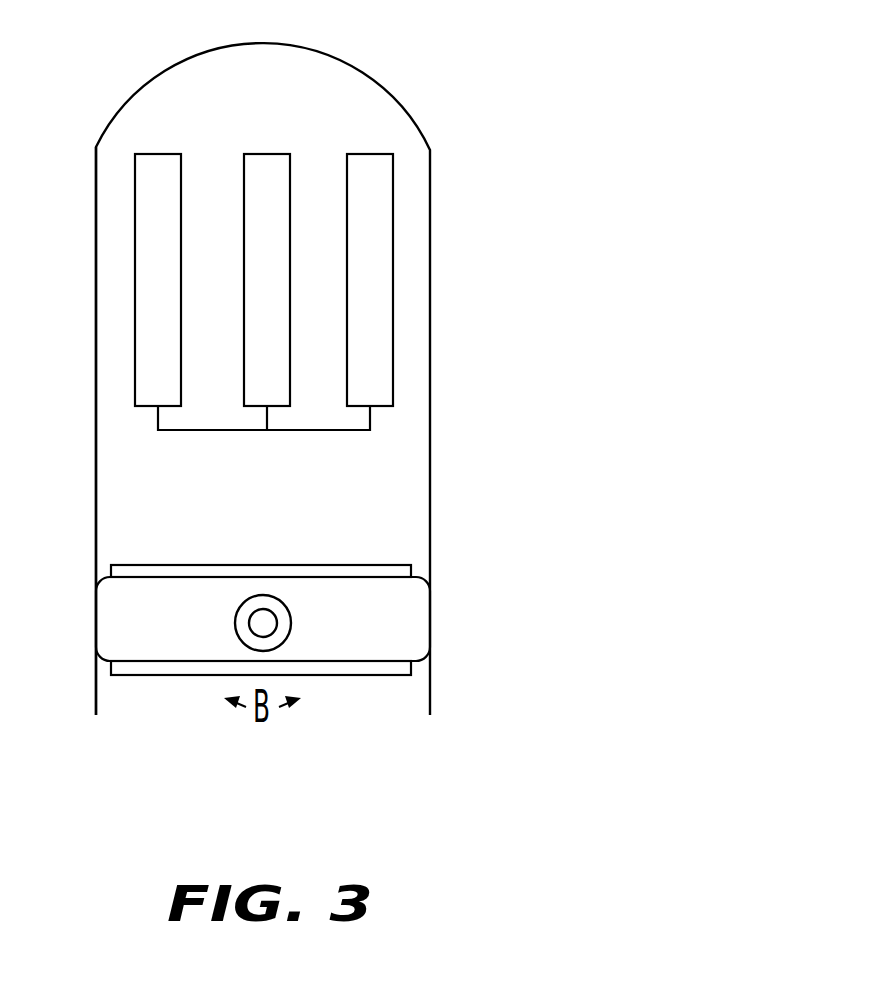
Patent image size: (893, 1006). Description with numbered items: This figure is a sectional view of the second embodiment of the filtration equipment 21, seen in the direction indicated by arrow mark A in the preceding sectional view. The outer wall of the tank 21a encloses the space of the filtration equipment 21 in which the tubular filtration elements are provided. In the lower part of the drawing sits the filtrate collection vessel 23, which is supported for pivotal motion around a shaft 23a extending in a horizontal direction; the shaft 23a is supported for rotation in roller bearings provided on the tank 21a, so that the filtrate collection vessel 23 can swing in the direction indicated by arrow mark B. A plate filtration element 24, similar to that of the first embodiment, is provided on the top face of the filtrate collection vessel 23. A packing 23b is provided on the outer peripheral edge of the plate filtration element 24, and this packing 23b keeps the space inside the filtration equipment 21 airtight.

The filtration equipment 21 is at (454, 84).
The tank 21a is at (96, 226).
The filtrate collection vessel 23 is at (351, 586).
The shaft 23a is at (235, 617).
The packing 23b is at (402, 623).
The plate filtration element 24 is at (262, 565).